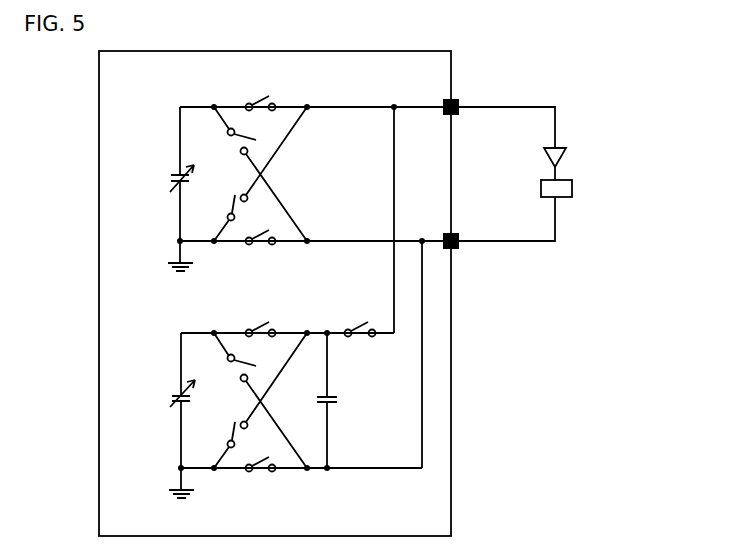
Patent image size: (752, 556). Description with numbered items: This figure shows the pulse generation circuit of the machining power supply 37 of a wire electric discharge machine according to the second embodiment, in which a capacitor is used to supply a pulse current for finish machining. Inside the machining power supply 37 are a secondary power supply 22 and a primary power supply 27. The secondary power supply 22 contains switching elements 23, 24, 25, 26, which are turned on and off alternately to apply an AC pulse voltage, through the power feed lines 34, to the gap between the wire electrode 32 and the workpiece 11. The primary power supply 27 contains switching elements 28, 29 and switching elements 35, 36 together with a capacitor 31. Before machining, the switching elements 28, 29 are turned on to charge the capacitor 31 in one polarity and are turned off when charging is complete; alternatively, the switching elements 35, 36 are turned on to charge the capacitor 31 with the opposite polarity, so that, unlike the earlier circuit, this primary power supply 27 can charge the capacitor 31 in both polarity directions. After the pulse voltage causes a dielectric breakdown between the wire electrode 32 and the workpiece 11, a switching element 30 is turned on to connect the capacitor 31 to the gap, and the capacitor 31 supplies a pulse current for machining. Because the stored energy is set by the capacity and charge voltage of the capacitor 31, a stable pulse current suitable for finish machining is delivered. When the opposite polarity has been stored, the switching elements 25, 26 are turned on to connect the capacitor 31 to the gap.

The workpiece 11 is at (572, 189).
The secondary power supply 22 is at (170, 178).
The switching element 23 is at (253, 102).
The switching element 24 is at (265, 245).
The switching element 25 is at (242, 133).
The switching element 26 is at (232, 202).
The primary power supply 27 is at (170, 394).
The switching element 28 is at (262, 325).
The switching element 29 is at (262, 478).
The switching element 30 is at (360, 338).
The capacitor 31 is at (336, 400).
The wire electrode 32 is at (568, 158).
The power feed lines 34 is at (503, 107).
The switching element 35 is at (242, 360).
The switching element 36 is at (232, 432).
The machining power supply 37 is at (98, 241).